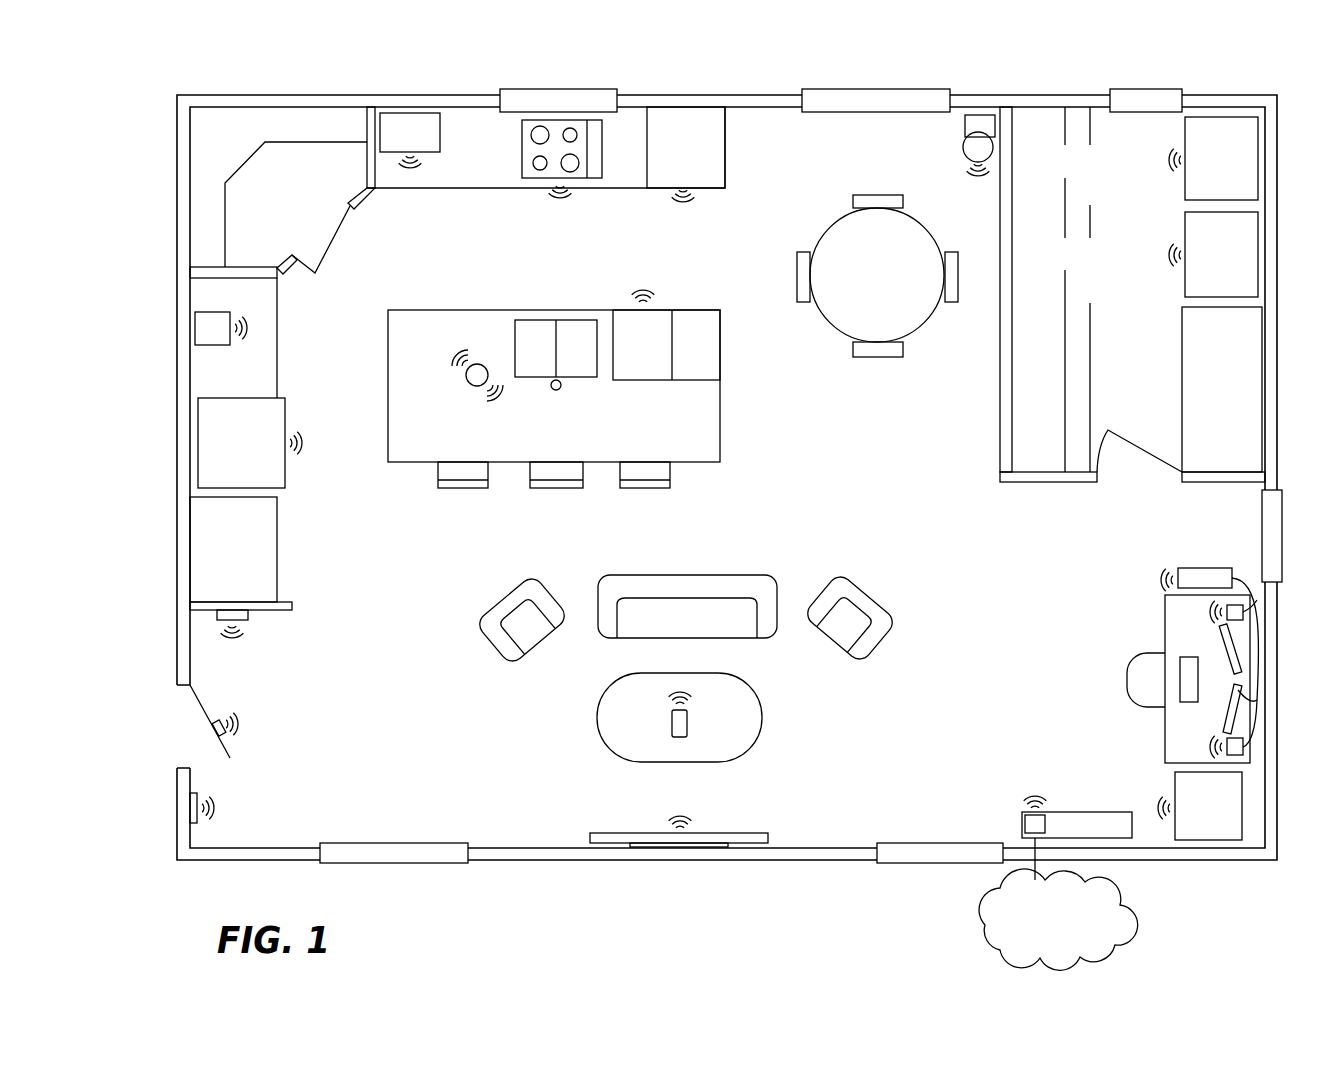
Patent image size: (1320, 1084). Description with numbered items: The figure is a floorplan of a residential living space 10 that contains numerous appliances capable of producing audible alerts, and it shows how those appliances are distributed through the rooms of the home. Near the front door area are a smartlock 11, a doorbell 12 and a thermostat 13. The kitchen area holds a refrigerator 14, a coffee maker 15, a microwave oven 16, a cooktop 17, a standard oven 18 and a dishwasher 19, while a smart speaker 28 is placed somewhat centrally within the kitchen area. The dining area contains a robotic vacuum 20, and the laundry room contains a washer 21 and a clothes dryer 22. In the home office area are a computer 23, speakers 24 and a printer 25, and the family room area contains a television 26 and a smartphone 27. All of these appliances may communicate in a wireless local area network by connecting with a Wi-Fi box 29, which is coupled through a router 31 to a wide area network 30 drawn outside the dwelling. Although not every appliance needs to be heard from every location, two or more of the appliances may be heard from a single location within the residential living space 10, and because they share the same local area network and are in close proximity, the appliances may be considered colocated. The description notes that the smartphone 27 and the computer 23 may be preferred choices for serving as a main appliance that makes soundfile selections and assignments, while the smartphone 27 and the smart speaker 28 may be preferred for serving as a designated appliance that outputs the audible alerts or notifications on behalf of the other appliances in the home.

The residential living space 10 is at (198, 88).
The smartlock 11 is at (327, 764).
The doorbell 12 is at (280, 834).
The thermostat 13 is at (347, 682).
The refrigerator 14 is at (355, 422).
The coffee maker 15 is at (355, 339).
The microwave oven 16 is at (435, 213).
The cooktop 17 is at (570, 217).
The standard oven 18 is at (718, 222).
The dishwasher 19 is at (775, 432).
The robotic vacuum 20 is at (958, 142).
The washer 21 is at (1193, 163).
The clothes dryer 22 is at (1193, 259).
The computer 23 is at (1165, 575).
The speakers 24 is at (1212, 612).
The printer 25 is at (1178, 780).
The television 26 is at (812, 804).
The smartphone 27 is at (578, 767).
The smart speaker 28 is at (400, 582).
The Wi-Fi box 29 is at (1050, 799).
The wide area network (WAN) 30 is at (1025, 800).
The router 31 is at (1065, 946).